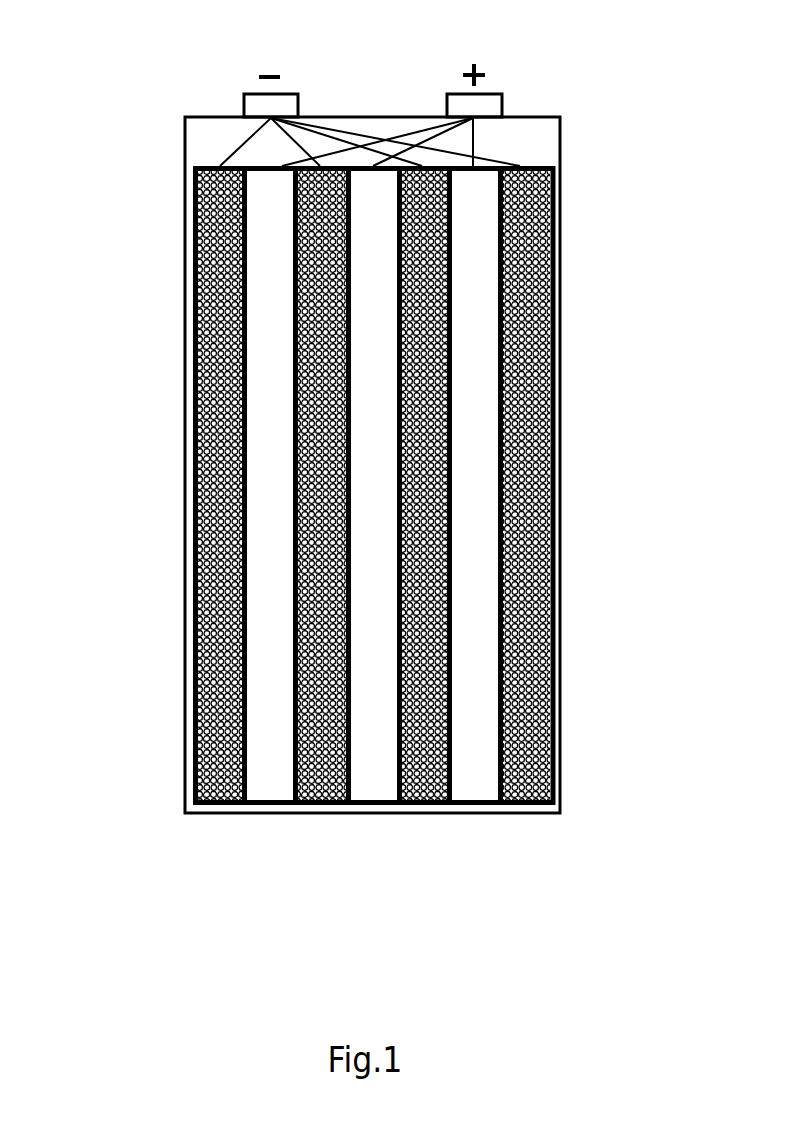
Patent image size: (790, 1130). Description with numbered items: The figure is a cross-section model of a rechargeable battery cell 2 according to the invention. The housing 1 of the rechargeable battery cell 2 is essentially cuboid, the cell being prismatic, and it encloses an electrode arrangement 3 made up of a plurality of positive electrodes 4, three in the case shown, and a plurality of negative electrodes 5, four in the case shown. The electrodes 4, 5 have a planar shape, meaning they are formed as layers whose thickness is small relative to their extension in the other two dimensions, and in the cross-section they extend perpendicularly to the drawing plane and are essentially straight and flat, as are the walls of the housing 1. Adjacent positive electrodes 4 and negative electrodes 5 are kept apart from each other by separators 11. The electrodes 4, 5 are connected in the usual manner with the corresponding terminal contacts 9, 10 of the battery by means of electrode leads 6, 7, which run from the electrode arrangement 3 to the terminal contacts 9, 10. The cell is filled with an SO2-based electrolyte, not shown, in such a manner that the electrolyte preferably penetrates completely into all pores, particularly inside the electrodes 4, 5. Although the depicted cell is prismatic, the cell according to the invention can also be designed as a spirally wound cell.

The housing 1 is at (561, 253).
The rechargeable battery cell 2 is at (166, 340).
The electrode arrangement 3 is at (484, 361).
The positive electrodes 4 is at (274, 783).
The negative electrodes 5 is at (222, 783).
The electrode leads 6 is at (502, 131).
The electrode leads 7 is at (242, 133).
The terminal contact 9 is at (490, 103).
The terminal contact 10 is at (287, 100).
The separators 11 is at (290, 538).